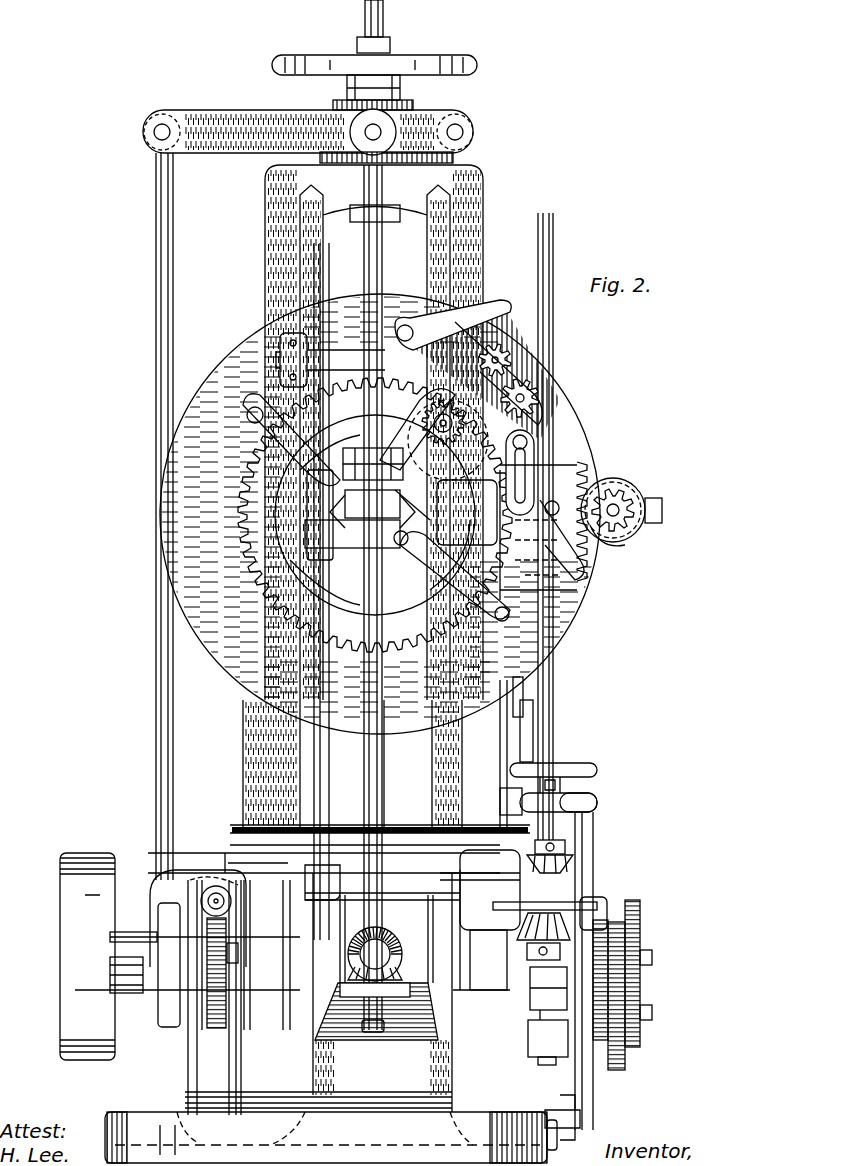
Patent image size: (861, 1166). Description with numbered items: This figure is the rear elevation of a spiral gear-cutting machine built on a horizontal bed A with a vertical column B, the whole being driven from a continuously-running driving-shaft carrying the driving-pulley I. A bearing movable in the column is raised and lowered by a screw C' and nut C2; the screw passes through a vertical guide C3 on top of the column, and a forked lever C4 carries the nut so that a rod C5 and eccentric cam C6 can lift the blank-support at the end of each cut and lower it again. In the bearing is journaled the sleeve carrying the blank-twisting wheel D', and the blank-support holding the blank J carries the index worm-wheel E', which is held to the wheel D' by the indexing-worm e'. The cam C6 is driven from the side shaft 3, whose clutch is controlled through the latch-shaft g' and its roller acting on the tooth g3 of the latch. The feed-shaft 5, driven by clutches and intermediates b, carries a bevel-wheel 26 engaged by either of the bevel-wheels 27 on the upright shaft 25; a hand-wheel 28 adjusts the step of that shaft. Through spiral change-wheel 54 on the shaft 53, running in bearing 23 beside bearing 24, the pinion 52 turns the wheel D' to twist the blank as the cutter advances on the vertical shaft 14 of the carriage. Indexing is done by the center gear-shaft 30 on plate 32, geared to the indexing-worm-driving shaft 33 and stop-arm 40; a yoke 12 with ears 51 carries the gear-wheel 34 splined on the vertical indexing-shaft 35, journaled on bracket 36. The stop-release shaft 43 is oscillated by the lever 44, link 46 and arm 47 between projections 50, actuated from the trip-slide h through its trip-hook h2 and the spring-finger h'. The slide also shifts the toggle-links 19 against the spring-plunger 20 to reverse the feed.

The screw C' is at (308, 531).
The nut C2 is at (388, 81).
The vertical guide C3 is at (396, 222).
The lever C4 is at (258, 112).
The rod C5 is at (156, 330).
The eccentric cam C6 is at (160, 985).
The vertical column B is at (484, 192).
The horizontal bed A is at (455, 1066).
The driving-pulley I is at (87, 956).
The index worm-wheel E' is at (380, 514).
The indexing-worm e' is at (330, 350).
The blank-twisting wheel D' is at (560, 531).
The blank J is at (467, 512).
The intermediates b is at (628, 1052).
The trip-slide h is at (484, 819).
The spring-finger h' is at (560, 931).
The trip-hook h2 is at (562, 810).
The latch-shaft g' is at (339, 832).
The tooth g3 is at (236, 960).
The side shaft 3 is at (206, 899).
The feed-shaft 5 is at (585, 932).
The yoke 12 is at (337, 515).
The vertical shaft 14 is at (422, 455).
The toggle-links 19 is at (534, 728).
The spring-plunger 20 is at (524, 690).
The bearing 23 is at (640, 530).
The bearing 24 is at (570, 590).
The upright shaft 25 is at (554, 325).
The bevel-wheel 26 is at (533, 959).
The bevel-wheels 27 is at (575, 862).
The hand-wheel 28 is at (548, 1112).
The center gear-shaft 30 is at (408, 545).
The plate 32 is at (245, 417).
The indexing-worm-driving shaft 33 is at (497, 352).
The gear-wheel 34 is at (256, 470).
The vertical indexing-shaft 35 is at (384, 765).
The bracket 36 is at (420, 988).
The rotatable stop-arm 40 is at (453, 440).
The stop-release shaft 43 is at (330, 755).
The lever 44 is at (410, 890).
The link 46 is at (490, 965).
The arm 47 is at (555, 903).
The projections 50 is at (425, 912).
The ears 51 is at (360, 447).
The pinion 52 is at (606, 495).
The shaft 53 is at (622, 538).
The spiral wheel 54 is at (632, 488).